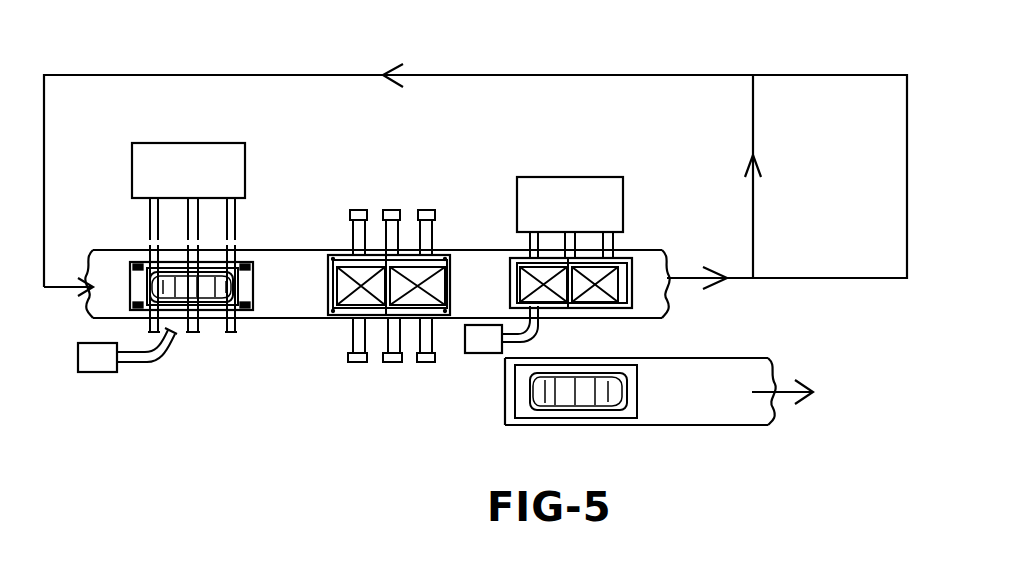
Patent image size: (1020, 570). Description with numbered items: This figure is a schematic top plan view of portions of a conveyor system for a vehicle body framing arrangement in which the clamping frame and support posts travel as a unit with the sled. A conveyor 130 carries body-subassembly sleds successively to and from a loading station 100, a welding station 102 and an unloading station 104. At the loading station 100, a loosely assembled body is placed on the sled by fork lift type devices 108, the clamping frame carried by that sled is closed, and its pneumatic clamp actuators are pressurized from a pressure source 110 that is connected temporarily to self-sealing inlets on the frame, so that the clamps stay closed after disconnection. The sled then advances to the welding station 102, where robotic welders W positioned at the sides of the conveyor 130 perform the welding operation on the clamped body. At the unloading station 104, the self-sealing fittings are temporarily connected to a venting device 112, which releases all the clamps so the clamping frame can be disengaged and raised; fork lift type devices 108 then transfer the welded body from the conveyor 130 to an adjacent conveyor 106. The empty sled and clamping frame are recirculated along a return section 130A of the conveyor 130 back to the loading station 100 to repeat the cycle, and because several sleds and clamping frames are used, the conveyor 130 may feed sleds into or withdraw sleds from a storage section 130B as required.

The loading station 100 is at (243, 249).
The welding station 102 is at (376, 210).
The unloading station 104 is at (628, 248).
The adjacent conveyor 106 is at (704, 418).
The fork lift type devices 108 is at (121, 191).
The pressure source 110 is at (94, 362).
The venting device 112 is at (475, 344).
The conveyor 130 is at (286, 322).
The return section 130A is at (757, 146).
The storage section 130B is at (907, 78).
The robotic welders W is at (355, 209).